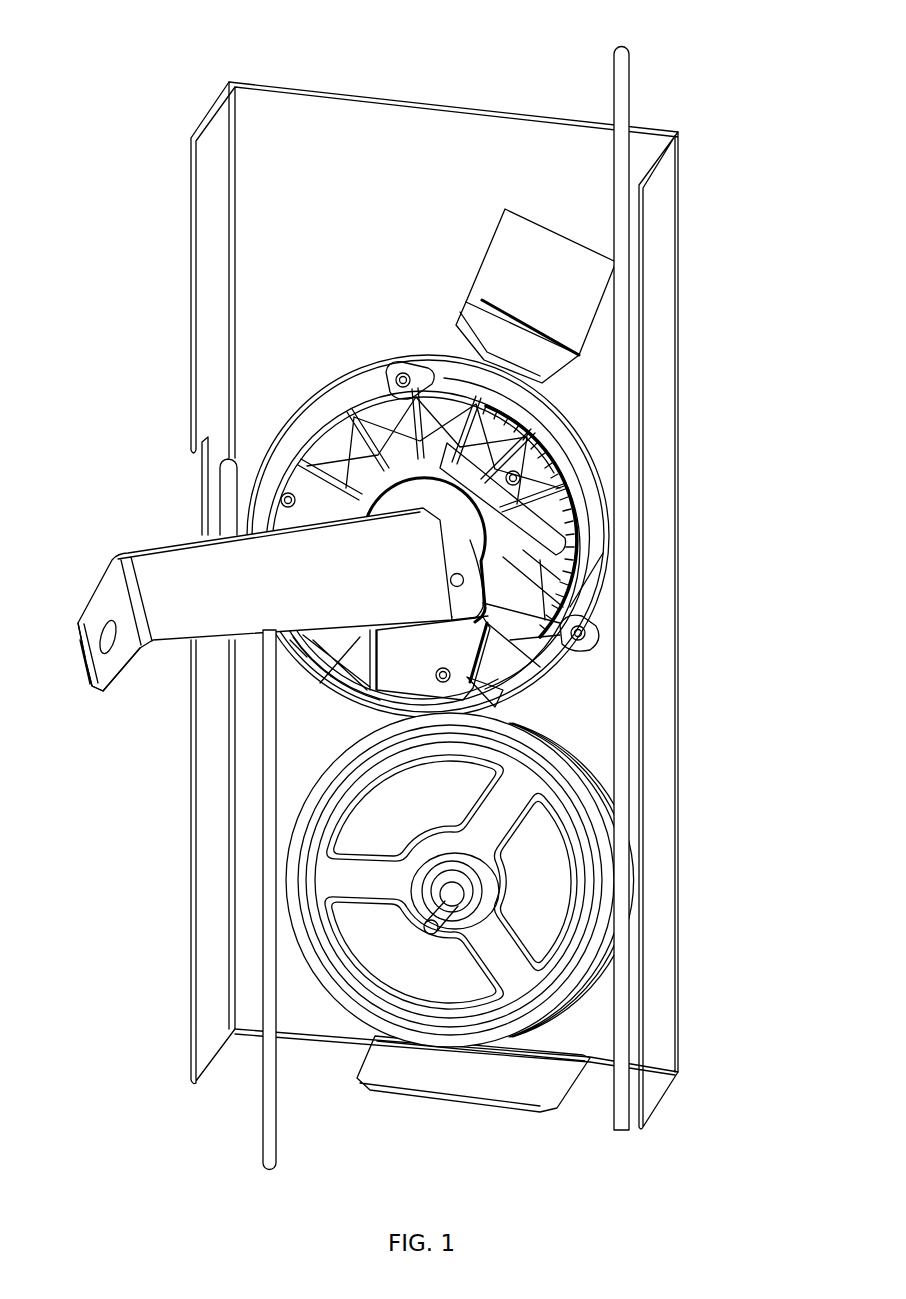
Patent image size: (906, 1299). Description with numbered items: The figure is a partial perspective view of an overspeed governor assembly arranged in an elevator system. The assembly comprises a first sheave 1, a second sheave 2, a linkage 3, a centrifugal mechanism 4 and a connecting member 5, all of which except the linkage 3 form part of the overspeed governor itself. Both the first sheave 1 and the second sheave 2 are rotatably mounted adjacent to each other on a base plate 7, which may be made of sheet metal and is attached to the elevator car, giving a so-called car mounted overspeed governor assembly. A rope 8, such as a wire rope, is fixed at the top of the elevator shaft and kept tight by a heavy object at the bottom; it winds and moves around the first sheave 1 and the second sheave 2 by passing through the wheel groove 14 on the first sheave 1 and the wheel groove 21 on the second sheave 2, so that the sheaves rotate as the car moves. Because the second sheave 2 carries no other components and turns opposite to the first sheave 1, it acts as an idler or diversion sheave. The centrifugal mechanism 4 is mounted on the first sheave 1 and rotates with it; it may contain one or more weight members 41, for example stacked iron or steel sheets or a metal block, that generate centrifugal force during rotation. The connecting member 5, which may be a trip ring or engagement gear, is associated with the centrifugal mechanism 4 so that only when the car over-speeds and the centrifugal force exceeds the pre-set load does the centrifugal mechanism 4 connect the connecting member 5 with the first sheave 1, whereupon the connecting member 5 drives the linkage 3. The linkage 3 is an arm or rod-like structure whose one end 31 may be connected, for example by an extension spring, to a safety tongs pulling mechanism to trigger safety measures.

The first sheave 1 is at (338, 393).
The second sheave 2 is at (570, 792).
The wheel groove 21 is at (632, 923).
The linkage 3 is at (175, 575).
The one end 31 is at (108, 605).
The centrifugal mechanism 4 is at (423, 372).
The weight member 41 is at (533, 512).
The connecting member 5 is at (586, 634).
The base plate 7 is at (397, 153).
The rope 8 is at (625, 93).
The wheel groove 14 is at (610, 546).